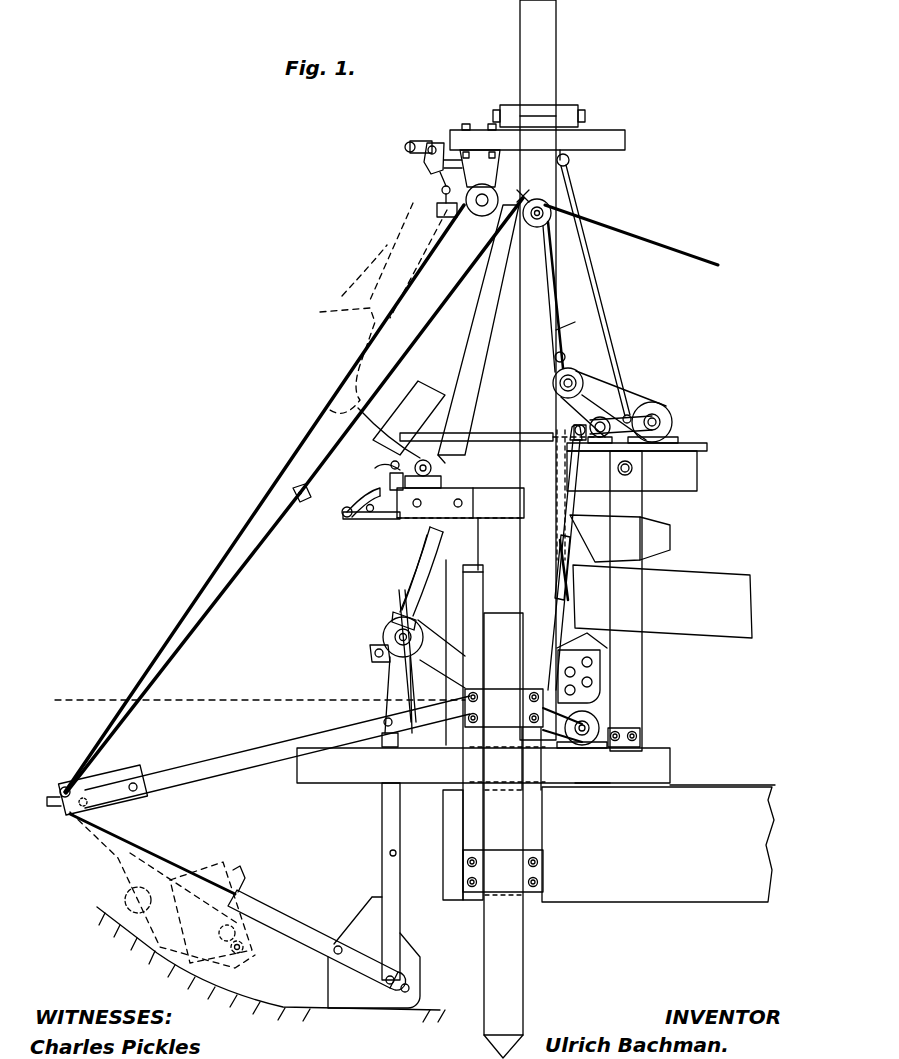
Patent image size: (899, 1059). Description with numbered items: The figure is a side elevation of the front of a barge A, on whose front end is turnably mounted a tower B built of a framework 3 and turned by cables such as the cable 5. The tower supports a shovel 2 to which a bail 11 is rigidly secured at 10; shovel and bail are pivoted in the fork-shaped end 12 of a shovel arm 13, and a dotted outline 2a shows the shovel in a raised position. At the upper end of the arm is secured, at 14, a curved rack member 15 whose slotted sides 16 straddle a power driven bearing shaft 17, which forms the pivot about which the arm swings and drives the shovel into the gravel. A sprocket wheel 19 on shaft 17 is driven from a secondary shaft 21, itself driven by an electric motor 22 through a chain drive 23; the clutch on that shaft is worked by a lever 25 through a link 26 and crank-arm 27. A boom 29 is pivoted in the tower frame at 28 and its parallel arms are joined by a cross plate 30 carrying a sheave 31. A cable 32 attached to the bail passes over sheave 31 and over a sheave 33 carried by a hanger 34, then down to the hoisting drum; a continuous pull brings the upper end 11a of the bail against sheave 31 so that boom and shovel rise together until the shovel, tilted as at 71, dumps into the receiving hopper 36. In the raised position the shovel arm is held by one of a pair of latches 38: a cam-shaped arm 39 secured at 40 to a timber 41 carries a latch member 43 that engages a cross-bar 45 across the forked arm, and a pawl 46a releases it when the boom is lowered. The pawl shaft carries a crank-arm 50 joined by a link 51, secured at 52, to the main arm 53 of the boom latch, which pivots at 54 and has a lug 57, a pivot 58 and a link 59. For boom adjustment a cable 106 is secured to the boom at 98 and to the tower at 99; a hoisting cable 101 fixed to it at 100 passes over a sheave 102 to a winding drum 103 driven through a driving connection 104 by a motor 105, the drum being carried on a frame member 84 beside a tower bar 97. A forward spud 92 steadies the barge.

The tower B is at (483, 395).
The framework 3 is at (539, 185).
The barge A is at (658, 843).
The link securing point 52 is at (537, 138).
The main arm of boom latch 53 is at (584, 144).
The pivot of main arm 54 is at (572, 162).
The inwardly turned lug 57 is at (438, 142).
The pivot plate 58 is at (433, 165).
The link of latch arm 59 is at (441, 191).
The hanger 34 is at (480, 168).
The sheave 33 is at (482, 216).
The cable securing point 99 is at (528, 196).
The sheave 102 is at (617, 232).
The link 51 is at (492, 300).
The hoisting cable 101 is at (465, 322).
The tilted shovel position 71 is at (382, 249).
The lever 25 is at (554, 333).
The winding drum 103 is at (593, 404).
The driving connection 104 is at (630, 412).
The motor 105 is at (672, 420).
The bar 97 is at (520, 435).
The bracket 84 is at (688, 478).
The cable 5 is at (395, 639).
The link 26 is at (590, 510).
The receiving hopper 36 is at (409, 418).
The pawl 46a is at (388, 459).
The crank-arm 50 is at (452, 470).
The securing point of cam-shaped arm 40 is at (460, 503).
The timber 41 is at (497, 529).
The latch member 43 is at (372, 497).
The latch 38 is at (345, 518).
The cam-shaped arm 39 is at (370, 512).
The cable 32 is at (200, 868).
The cable 106 is at (245, 558).
The cable attachment point 100 is at (316, 503).
The bracket (dotted position) 2a is at (333, 345).
The slots 16 is at (425, 565).
The curved rack member 15 is at (396, 597).
The sprocket wheel 19 is at (395, 636).
The power driven bearing shaft 17 is at (370, 648).
The rack securing point 14 is at (378, 700).
The boom 29 is at (277, 752).
The sheave 31 is at (92, 790).
The cable securing point on boom 98 is at (63, 787).
The cross piece or plate 30 is at (62, 806).
The upper end of bail 11a is at (85, 822).
The bail 11 is at (290, 922).
The bail securing point 10 is at (335, 954).
The shovel 2 is at (271, 959).
The fork-shaped end 12 is at (400, 915).
The shovel arm 13 is at (374, 841).
The cross-bar 45 is at (396, 854).
The spud 92 is at (493, 811).
The crank-arm 27 is at (515, 730).
The secondary shaft 21 is at (507, 754).
The electric motor 22 is at (612, 712).
The chain drive 23 is at (570, 750).
The boom pivot 28 is at (612, 680).